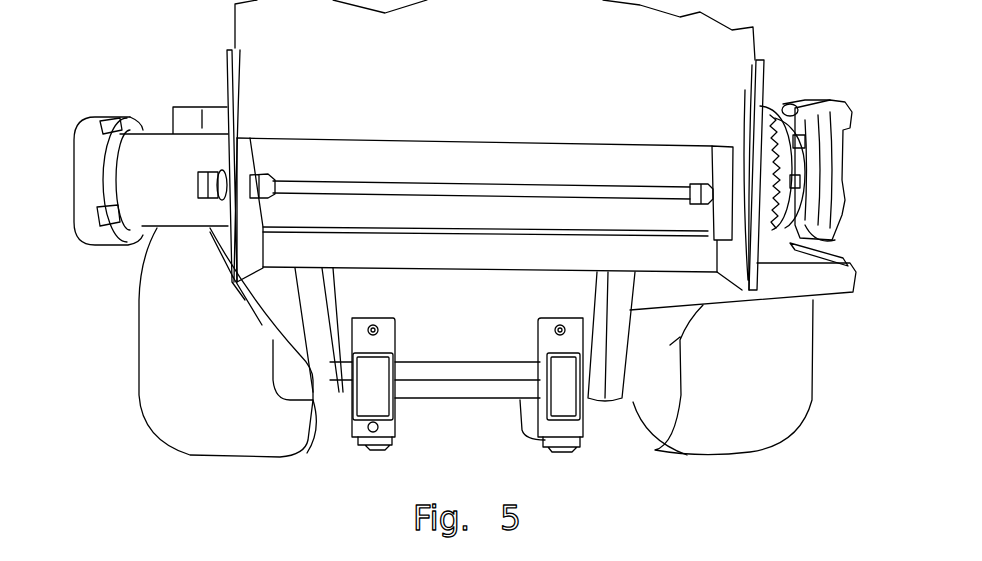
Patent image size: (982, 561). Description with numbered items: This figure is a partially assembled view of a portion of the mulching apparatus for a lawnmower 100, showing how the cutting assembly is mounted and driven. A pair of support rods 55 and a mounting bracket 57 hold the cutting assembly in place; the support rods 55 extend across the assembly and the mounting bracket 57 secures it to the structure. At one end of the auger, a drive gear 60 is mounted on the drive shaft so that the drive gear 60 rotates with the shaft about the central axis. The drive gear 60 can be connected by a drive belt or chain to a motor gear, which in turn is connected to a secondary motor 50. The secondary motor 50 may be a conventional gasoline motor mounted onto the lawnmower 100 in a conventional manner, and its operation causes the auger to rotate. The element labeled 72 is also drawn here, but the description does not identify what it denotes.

The secondary motor 50 is at (803, 140).
The support rods 55 is at (420, 188).
The mounting bracket 57 is at (460, 258).
The drive gear 60 is at (762, 215).
The hub 72 is at (147, 177).
The lawnmower 100 is at (833, 265).